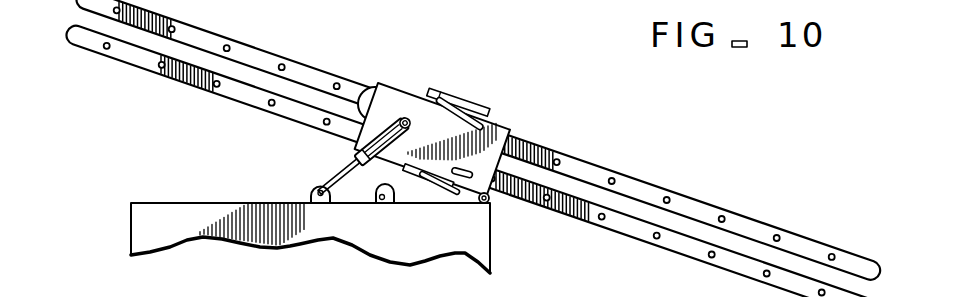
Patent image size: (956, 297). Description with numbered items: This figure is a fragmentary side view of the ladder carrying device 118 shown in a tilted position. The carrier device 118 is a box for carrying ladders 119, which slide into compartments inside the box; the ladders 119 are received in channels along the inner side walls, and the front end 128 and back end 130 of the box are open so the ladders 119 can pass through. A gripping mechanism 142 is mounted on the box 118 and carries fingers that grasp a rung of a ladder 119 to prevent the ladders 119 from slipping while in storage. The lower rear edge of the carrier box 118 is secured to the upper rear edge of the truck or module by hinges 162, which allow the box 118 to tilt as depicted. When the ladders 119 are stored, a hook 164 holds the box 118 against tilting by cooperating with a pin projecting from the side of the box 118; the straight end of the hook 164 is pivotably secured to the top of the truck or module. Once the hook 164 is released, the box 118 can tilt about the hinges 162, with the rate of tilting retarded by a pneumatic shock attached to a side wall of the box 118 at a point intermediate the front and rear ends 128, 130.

The ladder carrying device 118 is at (456, 124).
The ladders 119 is at (506, 148).
The front end 128 is at (385, 58).
The back end 130 is at (537, 147).
The gripping mechanism 142 is at (487, 108).
The hinges 162 is at (493, 205).
The hook 164 is at (395, 203).